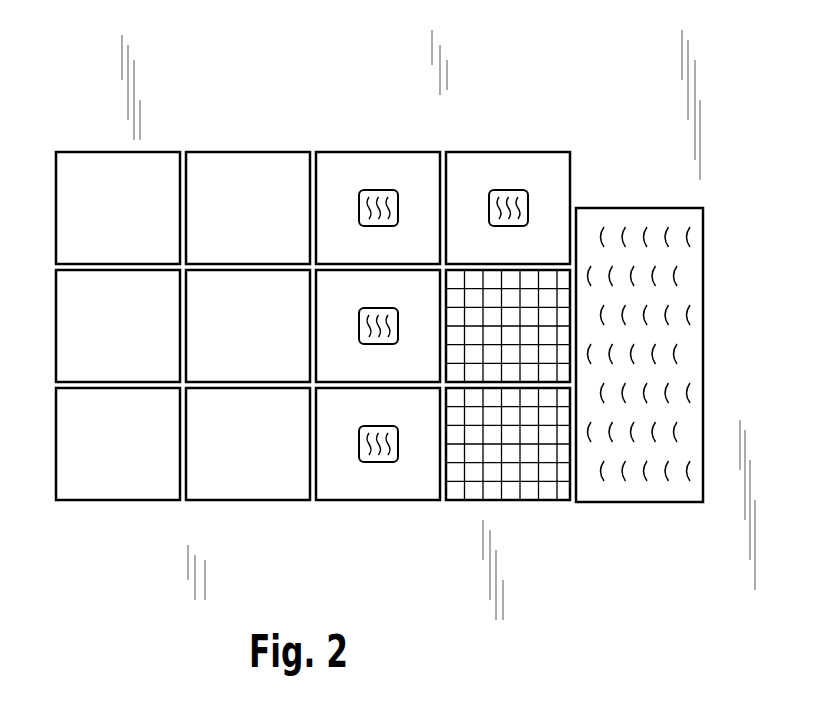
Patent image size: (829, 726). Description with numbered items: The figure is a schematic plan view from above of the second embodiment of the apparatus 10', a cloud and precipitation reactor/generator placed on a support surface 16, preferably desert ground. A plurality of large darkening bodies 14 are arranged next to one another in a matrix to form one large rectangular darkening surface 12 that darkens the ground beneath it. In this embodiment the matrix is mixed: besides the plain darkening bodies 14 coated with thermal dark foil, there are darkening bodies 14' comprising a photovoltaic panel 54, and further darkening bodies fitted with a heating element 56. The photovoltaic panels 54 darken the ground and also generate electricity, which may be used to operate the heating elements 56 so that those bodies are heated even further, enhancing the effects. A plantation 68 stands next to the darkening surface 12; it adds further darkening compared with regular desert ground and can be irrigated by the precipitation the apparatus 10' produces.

The apparatus 10' is at (416, 295).
The darkening surface 12 is at (571, 516).
The darkening body 14 is at (183, 292).
The darkening body with photovoltaic panel 14' is at (508, 419).
The photovoltaic panel 54 is at (508, 385).
The support surface 16 is at (659, 150).
The heating element 56 is at (383, 192).
The plantation 68 is at (680, 353).